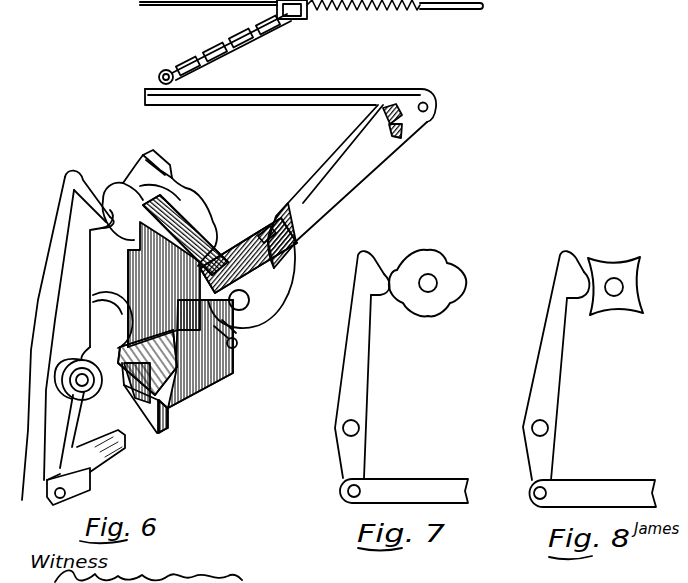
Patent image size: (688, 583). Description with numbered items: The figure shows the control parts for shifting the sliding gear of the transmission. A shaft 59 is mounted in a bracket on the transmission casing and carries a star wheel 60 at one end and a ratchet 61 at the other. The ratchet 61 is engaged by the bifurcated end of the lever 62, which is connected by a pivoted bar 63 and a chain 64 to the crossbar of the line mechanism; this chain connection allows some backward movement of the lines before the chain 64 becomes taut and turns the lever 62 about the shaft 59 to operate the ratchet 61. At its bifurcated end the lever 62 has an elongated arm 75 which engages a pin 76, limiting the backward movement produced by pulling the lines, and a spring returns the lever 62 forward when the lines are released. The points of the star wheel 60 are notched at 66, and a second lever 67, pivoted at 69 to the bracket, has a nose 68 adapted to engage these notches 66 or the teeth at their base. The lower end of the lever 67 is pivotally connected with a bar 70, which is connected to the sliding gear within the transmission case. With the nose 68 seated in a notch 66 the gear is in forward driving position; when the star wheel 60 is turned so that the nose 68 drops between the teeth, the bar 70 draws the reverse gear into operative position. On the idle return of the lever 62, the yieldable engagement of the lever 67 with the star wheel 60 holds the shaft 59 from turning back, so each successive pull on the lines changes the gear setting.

In FIG. 6, the shaft 59 is at (250, 300).
In FIG. 7, the shaft 59 is at (435, 280).
In FIG. 8, the shaft 59 is at (622, 288).
In FIG. 6, the star wheel 60 is at (167, 190).
In FIG. 7, the star wheel 60 is at (427, 308).
In FIG. 8, the star wheel 60 is at (617, 306).
In FIG. 6, the ratchet 61 is at (215, 260).
In FIG. 6, the lever 62 is at (325, 197).
In FIG. 6, the pivoted bar 63 is at (307, 98).
In FIG. 6, the chain 64 is at (210, 57).
In FIG. 6, the notches 66 is at (150, 157).
In FIG. 6, the lever 67 is at (68, 335).
In FIG. 7, the lever 67 is at (359, 364).
In FIG. 8, the lever 67 is at (553, 365).
In FIG. 6, the nose 68 is at (99, 187).
In FIG. 7, the nose 68 is at (388, 278).
In FIG. 8, the nose 68 is at (582, 282).
In FIG. 6, the pivot 69 is at (84, 382).
In FIG. 7, the pivot 69 is at (360, 428).
In FIG. 8, the pivot 69 is at (549, 428).
In FIG. 6, the bar 70 is at (108, 458).
In FIG. 7, the bar 70 is at (404, 492).
In FIG. 8, the bar 70 is at (593, 493).
In FIG. 6, the elongated arm 75 is at (170, 303).
In FIG. 6, the pin 76 is at (238, 343).